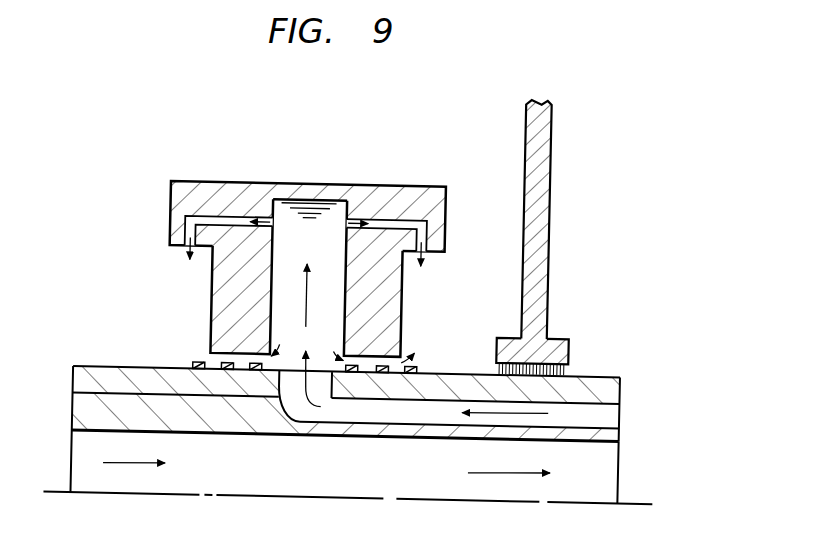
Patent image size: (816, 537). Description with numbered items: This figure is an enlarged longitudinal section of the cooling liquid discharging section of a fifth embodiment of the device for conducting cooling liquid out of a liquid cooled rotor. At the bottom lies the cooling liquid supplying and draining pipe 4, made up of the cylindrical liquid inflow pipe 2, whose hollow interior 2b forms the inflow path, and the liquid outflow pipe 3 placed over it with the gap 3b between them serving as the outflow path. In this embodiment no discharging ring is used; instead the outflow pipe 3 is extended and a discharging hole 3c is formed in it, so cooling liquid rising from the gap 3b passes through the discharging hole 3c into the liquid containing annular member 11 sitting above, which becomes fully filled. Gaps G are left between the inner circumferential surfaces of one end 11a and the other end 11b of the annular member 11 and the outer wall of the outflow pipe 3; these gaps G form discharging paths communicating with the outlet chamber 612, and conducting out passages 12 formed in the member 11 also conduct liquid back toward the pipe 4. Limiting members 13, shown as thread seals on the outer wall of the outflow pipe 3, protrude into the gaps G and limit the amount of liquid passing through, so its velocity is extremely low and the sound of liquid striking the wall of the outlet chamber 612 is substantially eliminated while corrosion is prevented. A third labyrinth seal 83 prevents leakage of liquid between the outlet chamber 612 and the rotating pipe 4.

The liquid containing annular member 11 is at (302, 242).
The one end of the annular member 11a is at (214, 291).
The other end of the annular member 11b is at (405, 287).
The conducting out passages 12 is at (174, 227).
The limiting members (thread seals) 13 is at (194, 360).
The gaps G is at (205, 349).
The outlet chamber 612 is at (492, 141).
The third labyrinth seal 83 is at (572, 360).
The liquid outflow pipe 3 is at (373, 404).
The gap (outflow path) 3b is at (618, 409).
The discharging hole 3c is at (295, 411).
The cylindrical liquid inflow pipe 2 is at (355, 434).
The hollow interior (inflow path) 2b is at (613, 461).
The cooling liquid supplying and draining pipe 4 is at (368, 462).